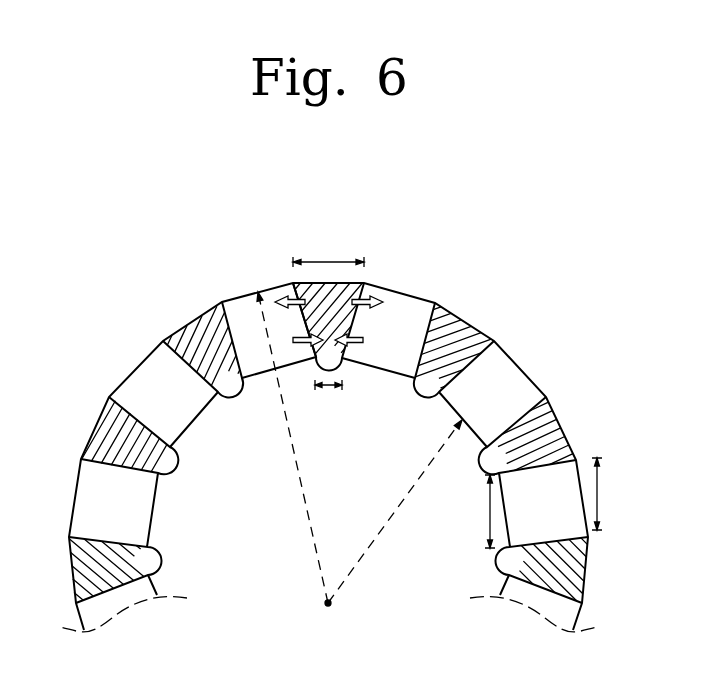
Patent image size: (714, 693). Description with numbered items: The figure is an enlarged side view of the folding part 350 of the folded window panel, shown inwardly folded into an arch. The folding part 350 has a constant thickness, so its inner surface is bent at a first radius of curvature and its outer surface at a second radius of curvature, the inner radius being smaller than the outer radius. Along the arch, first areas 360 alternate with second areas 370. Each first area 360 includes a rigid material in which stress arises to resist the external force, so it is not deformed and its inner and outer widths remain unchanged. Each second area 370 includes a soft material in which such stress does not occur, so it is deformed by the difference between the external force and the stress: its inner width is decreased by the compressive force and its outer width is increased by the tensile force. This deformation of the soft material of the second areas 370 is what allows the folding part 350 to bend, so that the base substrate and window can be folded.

The folding part 350 is at (526, 247).
The first area 360 is at (145, 328).
The second area 370 is at (95, 390).